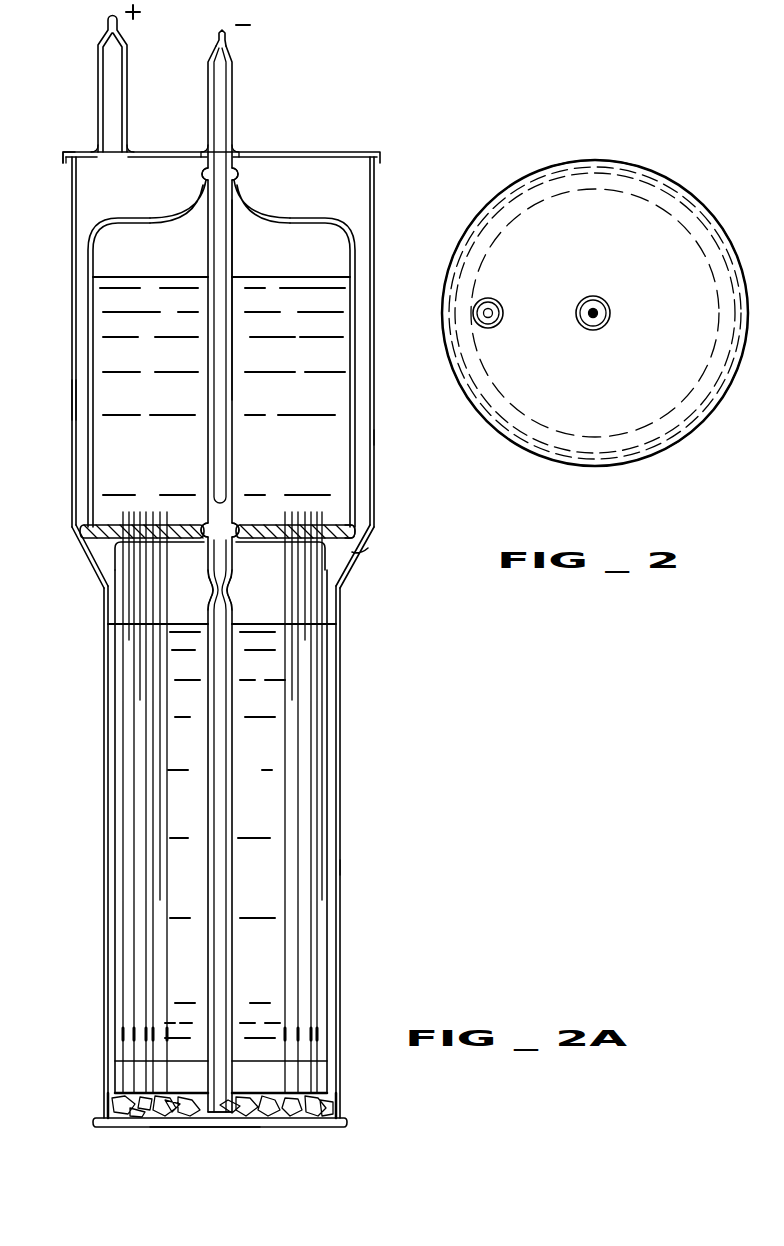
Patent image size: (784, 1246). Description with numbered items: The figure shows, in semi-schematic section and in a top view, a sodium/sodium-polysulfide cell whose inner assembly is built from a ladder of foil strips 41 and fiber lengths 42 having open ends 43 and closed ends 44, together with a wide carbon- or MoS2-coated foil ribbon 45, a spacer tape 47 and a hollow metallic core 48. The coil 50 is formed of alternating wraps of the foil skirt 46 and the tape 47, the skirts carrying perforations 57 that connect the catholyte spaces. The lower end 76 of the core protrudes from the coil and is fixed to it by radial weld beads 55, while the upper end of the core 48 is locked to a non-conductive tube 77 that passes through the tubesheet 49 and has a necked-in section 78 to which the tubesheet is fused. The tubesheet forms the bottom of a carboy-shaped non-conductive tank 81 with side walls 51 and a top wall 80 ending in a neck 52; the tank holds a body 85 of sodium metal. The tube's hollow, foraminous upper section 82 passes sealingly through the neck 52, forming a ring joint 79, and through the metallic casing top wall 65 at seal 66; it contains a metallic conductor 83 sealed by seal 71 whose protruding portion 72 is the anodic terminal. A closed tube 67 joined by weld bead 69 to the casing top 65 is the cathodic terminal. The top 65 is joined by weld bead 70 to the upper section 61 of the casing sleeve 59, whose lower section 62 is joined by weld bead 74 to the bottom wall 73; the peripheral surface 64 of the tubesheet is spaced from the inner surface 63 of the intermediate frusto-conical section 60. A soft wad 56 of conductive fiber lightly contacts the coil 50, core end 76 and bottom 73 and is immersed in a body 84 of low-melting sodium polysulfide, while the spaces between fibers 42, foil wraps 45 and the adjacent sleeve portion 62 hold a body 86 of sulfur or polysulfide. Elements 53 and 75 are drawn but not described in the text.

In FIG. 2A, the foil strips 41 is at (119, 1032).
In FIG. 2A, the fiber lengths 42 is at (130, 548).
In FIG. 2A, the open ends 43 is at (131, 520).
In FIG. 2A, the closed ends 44 is at (318, 1038).
In FIG. 2A, the foil ribbon 45 is at (114, 722).
In FIG. 2A, the foil skirt 46 is at (125, 1080).
In FIG. 2A, the spacer tape 47 is at (318, 1080).
In FIG. 2A, the hollow metallic core 48 is at (233, 757).
In FIG. 2A, the tubesheet 49 is at (338, 523).
In FIG. 2A, the coil 50 is at (145, 1115).
In FIG. 2A, the side walls 51 is at (357, 300).
In FIG. 2, the side walls 51 is at (672, 208).
In FIG. 2A, the neck 52 is at (250, 196).
In FIG. 2A, the seal joint 53 is at (366, 545).
In FIG. 2A, the radial weld beads 55 is at (305, 1115).
In FIG. 2A, the soft wad 56 is at (272, 1118).
In FIG. 2A, the perforations 57 is at (115, 1052).
In FIG. 2A, the casing sleeve 59 is at (395, 433).
In FIG. 2A, the frusto-conical section 60 is at (80, 546).
In FIG. 2A, the upper section 61 is at (72, 275).
In FIG. 2, the upper section 61 is at (604, 158).
In FIG. 2A, the lower section 62 is at (104, 858).
In FIG. 2A, the inner surface 63 is at (356, 556).
In FIG. 2A, the peripheral surface 64 is at (80, 526).
In FIG. 2A, the casing top wall 65 is at (345, 152).
In FIG. 2, the casing top wall 65 is at (590, 412).
In FIG. 2A, the seal 66 is at (240, 148).
In FIG. 2, the seal 66 is at (586, 325).
In FIG. 2A, the tube 67 is at (98, 73).
In FIG. 2, the tube 67 is at (500, 300).
In FIG. 2A, the weld bead 69 is at (96, 148).
In FIG. 2, the weld bead 69 is at (498, 328).
In FIG. 2A, the weld bead 70 is at (68, 161).
In FIG. 2, the weld bead 70 is at (545, 160).
In FIG. 2A, the seal 71 is at (231, 50).
In FIG. 2, the seal 71 is at (600, 316).
In FIG. 2A, the protruding portion 72 is at (214, 42).
In FIG. 2, the protruding portion 72 is at (598, 311).
In FIG. 2A, the bottom wall 73 is at (206, 1128).
In FIG. 2A, the weld bead 74 is at (347, 1124).
In FIG. 2A, the lower cell assembly 75 is at (383, 862).
In FIG. 2A, the lower end 76 is at (237, 1118).
In FIG. 2A, the non-conductive tube 77 is at (220, 574).
In FIG. 2A, the necked-in section 78 is at (205, 523).
In FIG. 2A, the ring joint 79 is at (205, 177).
In FIG. 2A, the top wall 80 is at (145, 215).
In FIG. 2A, the non-conductive tank 81 is at (80, 404).
In FIG. 2A, the upper section 82 is at (233, 257).
In FIG. 2A, the metallic conductor 83 is at (220, 240).
In FIG. 2A, the body of sodium polysulfide 84 is at (172, 1118).
In FIG. 2A, the body of sodium metal 85 is at (125, 354).
In FIG. 2A, the body of sulfur or sodium polysulfide 86 is at (165, 945).